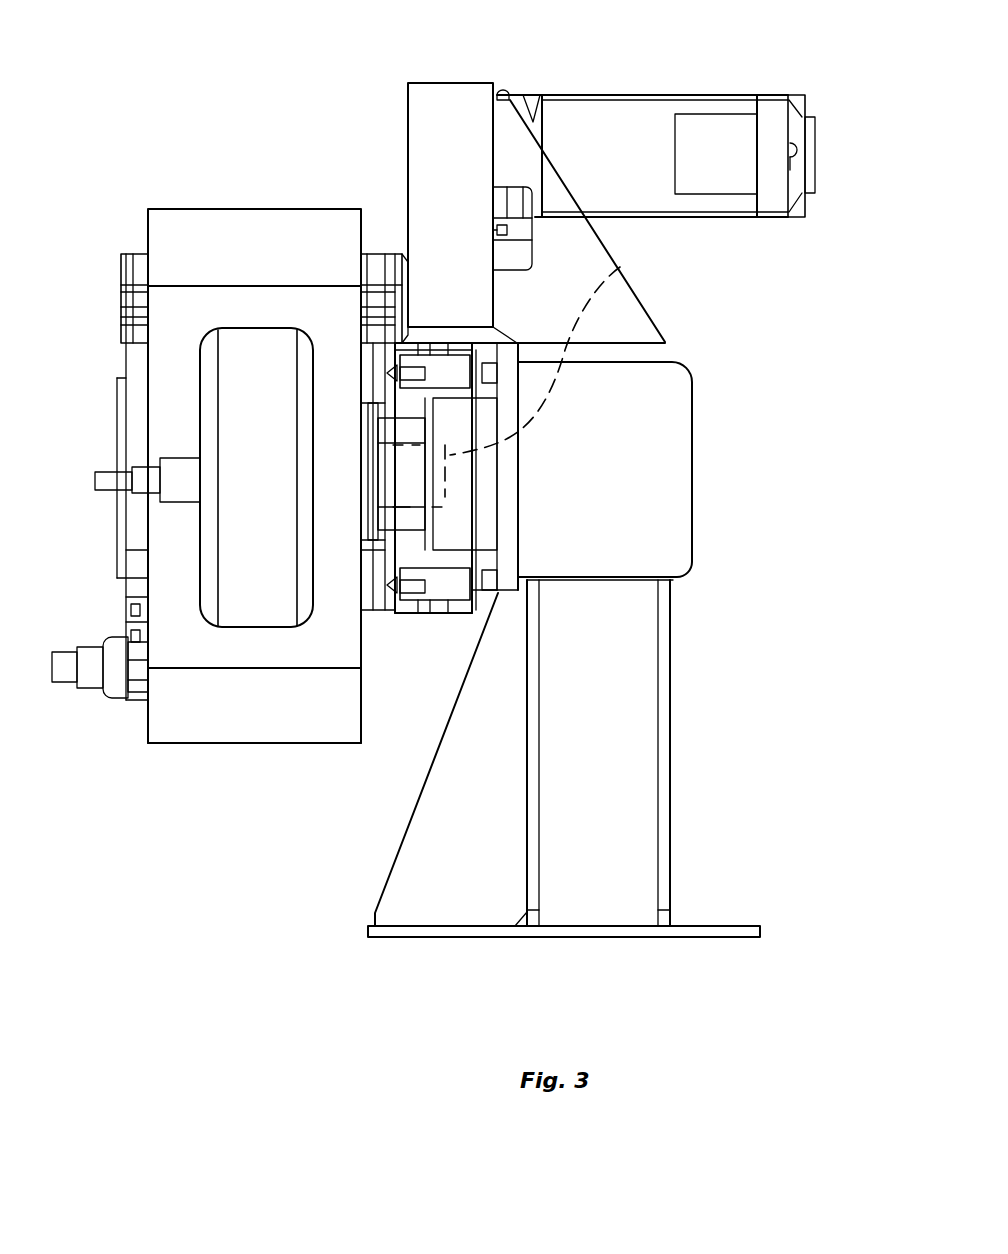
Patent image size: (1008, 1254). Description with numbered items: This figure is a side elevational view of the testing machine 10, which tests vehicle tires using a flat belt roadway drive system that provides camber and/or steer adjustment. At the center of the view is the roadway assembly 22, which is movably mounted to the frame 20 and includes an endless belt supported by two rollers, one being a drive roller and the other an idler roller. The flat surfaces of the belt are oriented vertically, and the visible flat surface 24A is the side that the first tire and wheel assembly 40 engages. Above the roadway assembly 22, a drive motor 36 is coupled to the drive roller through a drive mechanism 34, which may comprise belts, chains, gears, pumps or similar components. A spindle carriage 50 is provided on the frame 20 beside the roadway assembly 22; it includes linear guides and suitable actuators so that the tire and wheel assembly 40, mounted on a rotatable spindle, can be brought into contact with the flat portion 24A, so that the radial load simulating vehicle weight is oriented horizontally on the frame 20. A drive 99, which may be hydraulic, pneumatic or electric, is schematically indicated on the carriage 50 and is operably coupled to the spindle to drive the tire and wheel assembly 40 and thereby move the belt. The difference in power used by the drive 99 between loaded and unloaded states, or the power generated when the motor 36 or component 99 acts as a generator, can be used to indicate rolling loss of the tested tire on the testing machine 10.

The testing machine 10 is at (745, 423).
The frame 20 is at (718, 723).
The roadway assembly 22 is at (251, 186).
The flat surface of roadway assembly belt 24A is at (289, 318).
The drive mechanism 34 is at (447, 83).
The drive motor 36 is at (765, 95).
The first tire and wheel assembly 40 is at (256, 656).
The spindle carriage 50 is at (431, 637).
The drive 99 is at (640, 262).